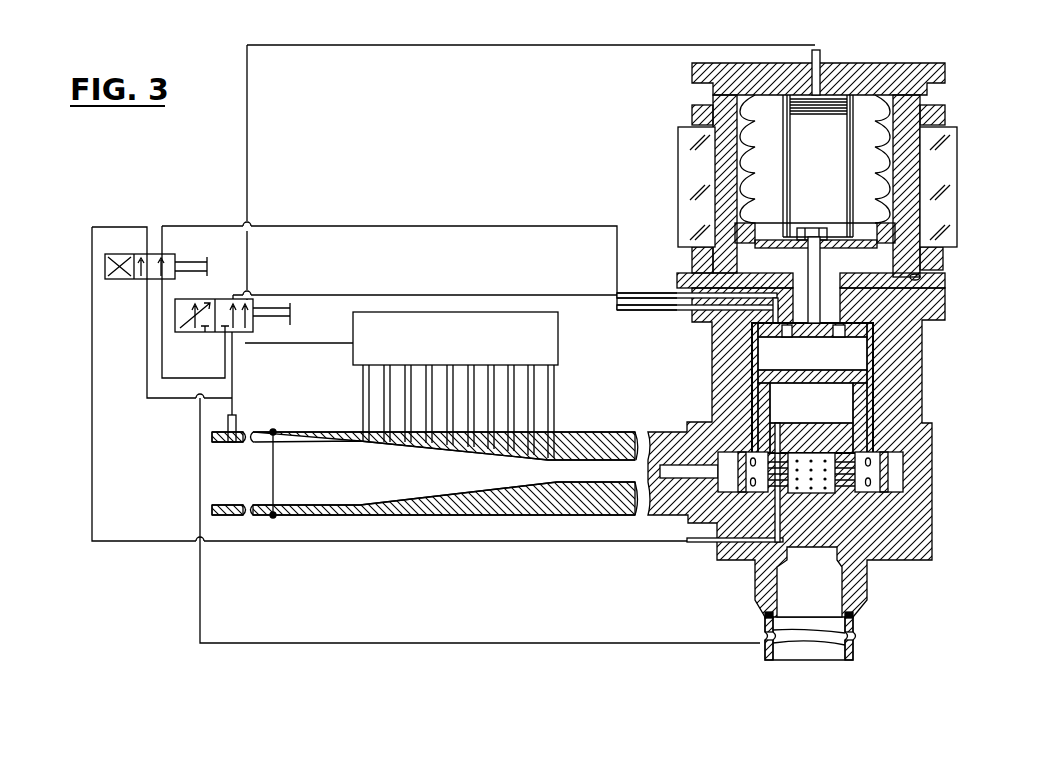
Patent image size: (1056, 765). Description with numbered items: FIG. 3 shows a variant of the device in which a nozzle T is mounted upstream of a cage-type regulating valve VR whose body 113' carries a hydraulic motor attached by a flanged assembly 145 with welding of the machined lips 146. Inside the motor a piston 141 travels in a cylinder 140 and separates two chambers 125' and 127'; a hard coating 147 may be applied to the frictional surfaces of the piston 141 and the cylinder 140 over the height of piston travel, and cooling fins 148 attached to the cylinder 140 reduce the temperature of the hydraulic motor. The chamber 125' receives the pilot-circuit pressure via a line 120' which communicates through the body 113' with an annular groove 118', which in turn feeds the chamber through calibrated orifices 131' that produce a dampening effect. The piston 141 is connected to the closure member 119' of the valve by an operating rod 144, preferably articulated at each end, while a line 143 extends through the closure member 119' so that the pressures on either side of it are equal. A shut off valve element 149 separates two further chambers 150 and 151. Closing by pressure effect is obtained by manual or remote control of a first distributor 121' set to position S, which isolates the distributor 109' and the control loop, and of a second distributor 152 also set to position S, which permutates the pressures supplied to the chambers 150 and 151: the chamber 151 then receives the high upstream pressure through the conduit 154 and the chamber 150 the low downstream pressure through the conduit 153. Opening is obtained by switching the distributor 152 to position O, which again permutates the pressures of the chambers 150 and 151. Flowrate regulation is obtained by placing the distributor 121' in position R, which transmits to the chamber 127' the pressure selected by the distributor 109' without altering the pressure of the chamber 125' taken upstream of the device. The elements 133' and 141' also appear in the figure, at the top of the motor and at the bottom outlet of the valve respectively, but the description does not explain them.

The electrical connection stem 133' is at (810, 53).
The cooling fins 148 is at (688, 158).
The cylinder 140 is at (923, 157).
The hard coating 147 is at (735, 222).
The piston 141 is at (945, 161).
The flanged assembly 145 is at (943, 262).
The machined lips 146 is at (923, 278).
The chamber 127' is at (818, 166).
The calibrated orifices 131' is at (815, 234).
The chamber 125' is at (769, 260).
The annular groove 118' is at (874, 260).
The line 120' is at (651, 266).
The conduit 154 is at (678, 310).
The operating rod 144 is at (757, 316).
The line 143 is at (757, 338).
The shut off valve element 149 is at (750, 382).
The chamber 151 is at (828, 363).
The chamber 150 is at (823, 409).
The closure member 119' is at (936, 338).
The body 113' is at (952, 370).
The regulating valve VR is at (905, 413).
The conduit 153 is at (673, 543).
The outlet pipe 141' is at (774, 631).
The second distributor 152 is at (123, 252).
The first distributor 121' is at (238, 288).
The distributor 109' is at (455, 385).
The nozzle T is at (320, 452).
The position O is at (173, 256).
The position S is at (122, 280).
The position R is at (240, 332).